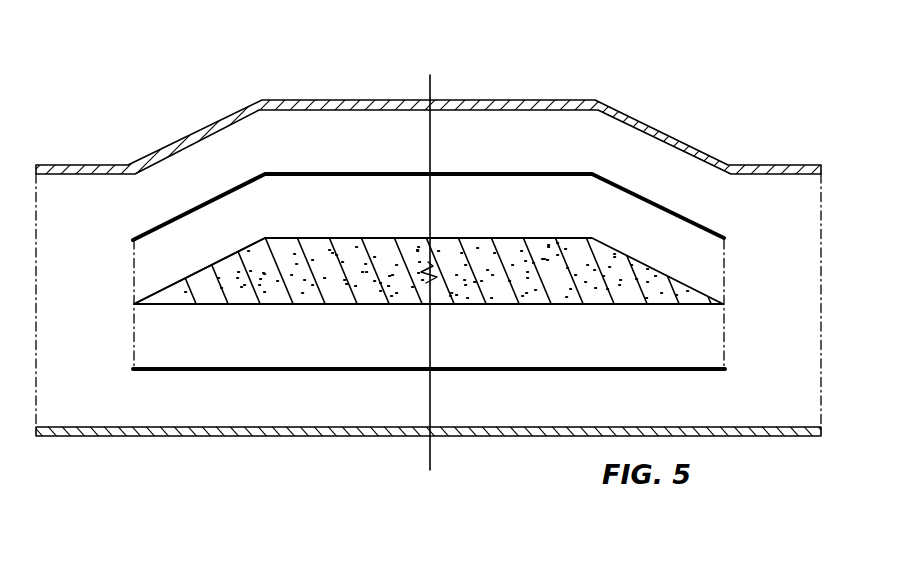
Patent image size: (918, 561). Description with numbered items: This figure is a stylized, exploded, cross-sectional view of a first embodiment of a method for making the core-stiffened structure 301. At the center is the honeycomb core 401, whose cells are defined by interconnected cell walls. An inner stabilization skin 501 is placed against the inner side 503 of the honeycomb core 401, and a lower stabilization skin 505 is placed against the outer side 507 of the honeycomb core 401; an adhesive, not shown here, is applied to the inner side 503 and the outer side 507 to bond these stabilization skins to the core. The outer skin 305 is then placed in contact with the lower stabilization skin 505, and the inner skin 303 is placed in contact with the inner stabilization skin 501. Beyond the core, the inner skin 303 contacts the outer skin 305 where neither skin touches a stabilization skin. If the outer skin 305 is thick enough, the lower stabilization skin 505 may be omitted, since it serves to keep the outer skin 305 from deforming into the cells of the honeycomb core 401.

The core-stiffened structure 301 is at (714, 93).
The inner skin 303 is at (212, 125).
The outer skin 305 is at (232, 437).
The honeycomb core 401 is at (357, 282).
The inner stabilization skin 501 is at (240, 186).
The inner side of honeycomb core 503 is at (203, 268).
The lower stabilization skin 505 is at (290, 371).
The outer side of honeycomb core 507 is at (498, 305).